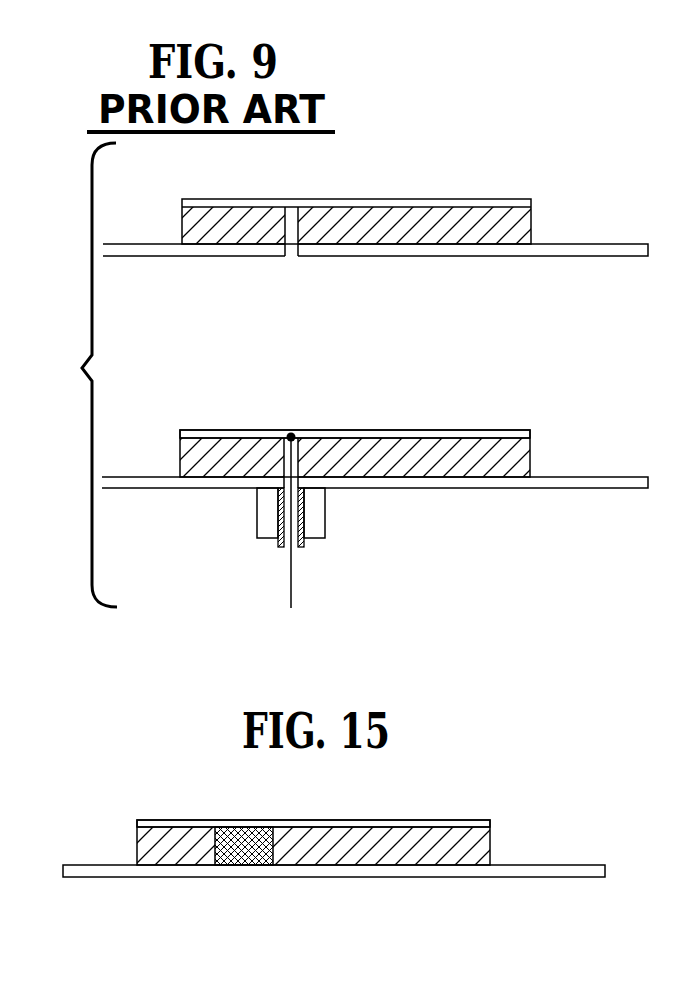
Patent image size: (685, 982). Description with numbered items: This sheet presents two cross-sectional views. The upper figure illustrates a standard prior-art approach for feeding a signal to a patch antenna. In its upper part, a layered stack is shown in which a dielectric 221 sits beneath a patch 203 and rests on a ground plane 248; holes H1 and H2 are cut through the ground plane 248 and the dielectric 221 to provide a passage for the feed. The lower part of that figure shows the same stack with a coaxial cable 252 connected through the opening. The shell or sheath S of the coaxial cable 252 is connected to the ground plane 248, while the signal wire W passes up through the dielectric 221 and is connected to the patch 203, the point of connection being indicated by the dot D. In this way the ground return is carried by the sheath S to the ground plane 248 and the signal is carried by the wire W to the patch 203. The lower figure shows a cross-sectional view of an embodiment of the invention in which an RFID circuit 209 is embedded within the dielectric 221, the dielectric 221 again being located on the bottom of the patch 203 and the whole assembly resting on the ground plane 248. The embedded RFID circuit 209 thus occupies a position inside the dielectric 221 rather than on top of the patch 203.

In FIG. 9, the dielectric 221 is at (531, 222).
In FIG. 15, the dielectric 221 is at (490, 841).
In FIG. 9, the ground plane 248 is at (628, 244).
In FIG. 15, the ground plane 248 is at (588, 865).
In FIG. 9, the patch 203 is at (372, 430).
In FIG. 15, the patch 203 is at (368, 820).
In FIG. 9, the hole H1 is at (285, 230).
In FIG. 9, the hole H2 is at (298, 258).
In FIG. 9, the dot D is at (290, 432).
In FIG. 9, the shell or sheath S is at (325, 508).
In FIG. 9, the signal wire W is at (292, 566).
In FIG. 9, the coaxial cable 252 is at (246, 532).
In FIG. 15, the RFID circuit 209 is at (236, 814).